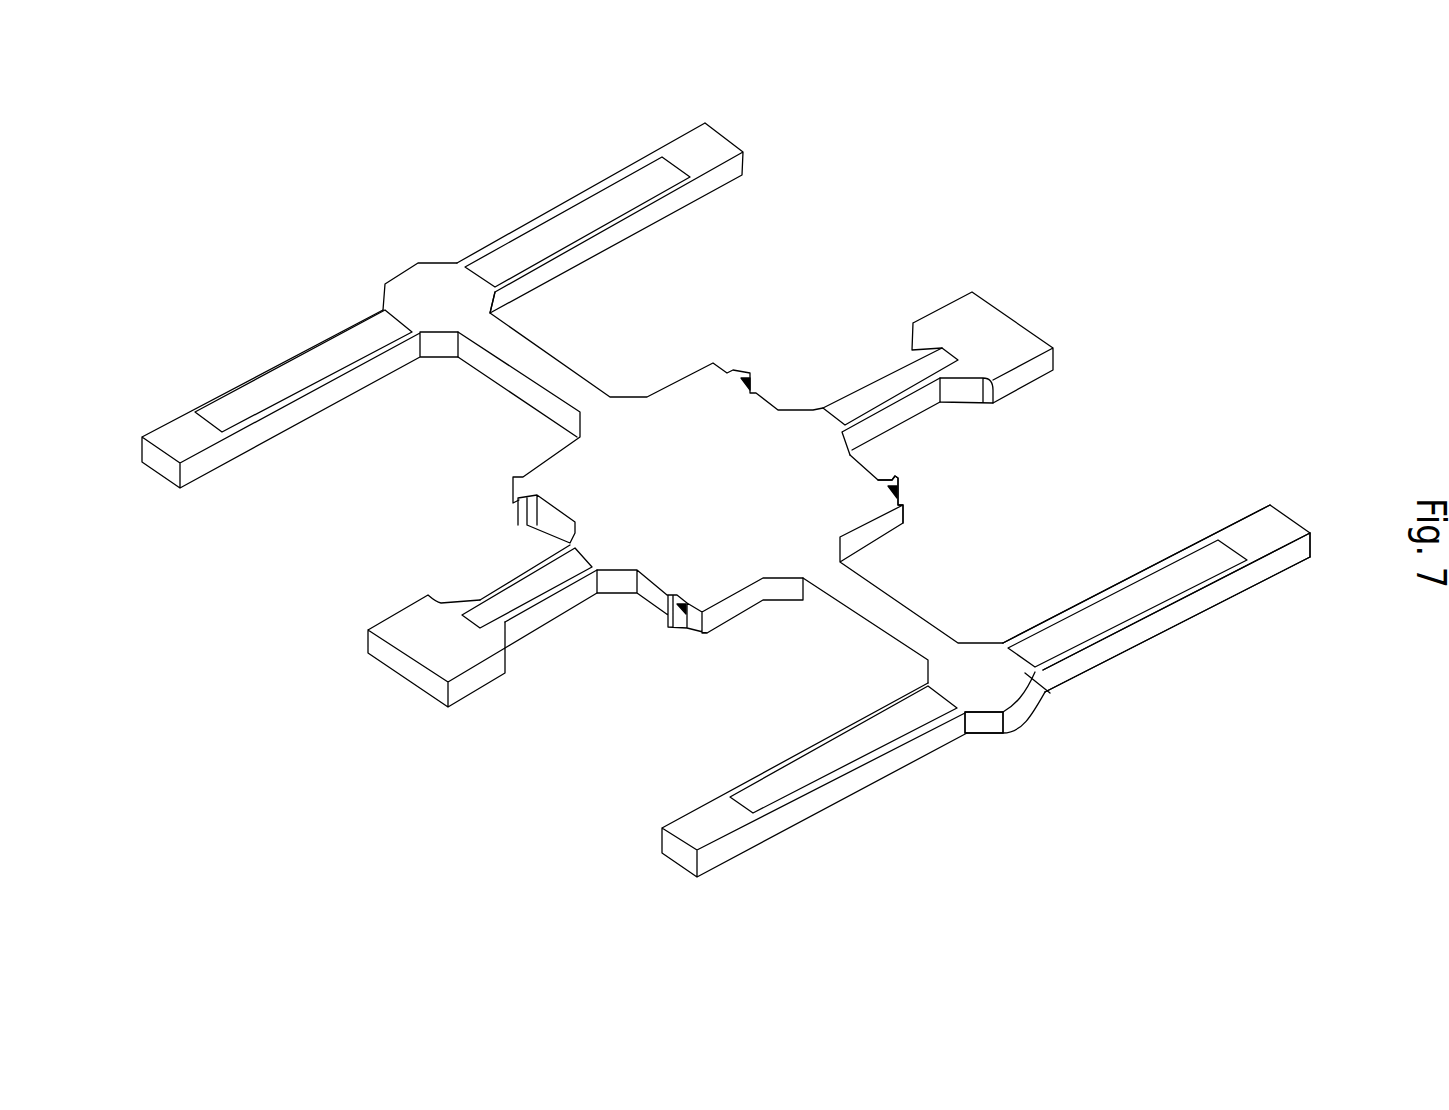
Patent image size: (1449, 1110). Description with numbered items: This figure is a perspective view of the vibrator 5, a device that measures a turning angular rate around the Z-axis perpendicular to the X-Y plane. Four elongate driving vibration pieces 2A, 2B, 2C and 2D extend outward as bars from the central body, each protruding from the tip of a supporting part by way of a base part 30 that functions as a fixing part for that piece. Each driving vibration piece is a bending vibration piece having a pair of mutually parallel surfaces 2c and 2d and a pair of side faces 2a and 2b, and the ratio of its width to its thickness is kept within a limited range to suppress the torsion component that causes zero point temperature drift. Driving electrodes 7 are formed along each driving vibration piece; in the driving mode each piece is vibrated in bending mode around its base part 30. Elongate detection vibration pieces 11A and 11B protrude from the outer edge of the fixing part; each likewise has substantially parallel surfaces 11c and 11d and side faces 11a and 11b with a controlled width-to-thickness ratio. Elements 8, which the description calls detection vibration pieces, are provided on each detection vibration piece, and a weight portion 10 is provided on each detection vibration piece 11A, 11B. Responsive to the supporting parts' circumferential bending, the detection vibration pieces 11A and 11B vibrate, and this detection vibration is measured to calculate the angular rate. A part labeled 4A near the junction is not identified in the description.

The vibrator 5 is at (925, 254).
The driving vibration piece 2A is at (1240, 535).
The driving vibration piece 2B is at (832, 793).
The driving vibration piece 2C is at (343, 392).
The driving vibration piece 2D is at (642, 230).
The side face 2a is at (1191, 616).
The side face 2b is at (1100, 592).
The surface 2c is at (1274, 548).
The surface 2d is at (1133, 647).
The driving electrode 7 is at (318, 358).
The detection vibration piece 8 is at (517, 592).
The weight portion 10 is at (997, 322).
The detection vibration piece 11A is at (903, 413).
The detection vibration piece 11B is at (548, 613).
The side face 11a is at (927, 397).
The side face 11b is at (877, 377).
The surface 11c is at (972, 368).
The surface 11d is at (888, 430).
The base part 30 is at (822, 424).
The joint portion 4A is at (1017, 697).